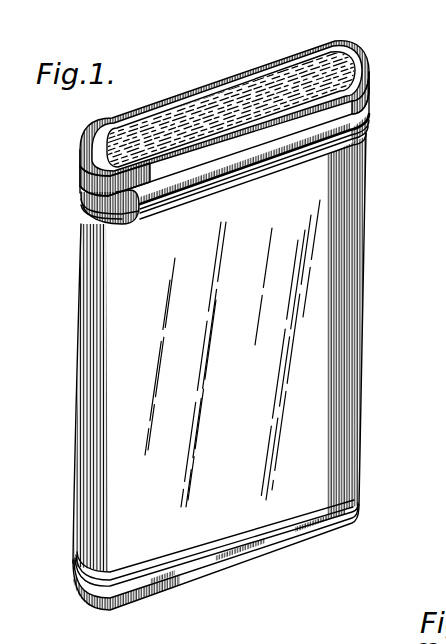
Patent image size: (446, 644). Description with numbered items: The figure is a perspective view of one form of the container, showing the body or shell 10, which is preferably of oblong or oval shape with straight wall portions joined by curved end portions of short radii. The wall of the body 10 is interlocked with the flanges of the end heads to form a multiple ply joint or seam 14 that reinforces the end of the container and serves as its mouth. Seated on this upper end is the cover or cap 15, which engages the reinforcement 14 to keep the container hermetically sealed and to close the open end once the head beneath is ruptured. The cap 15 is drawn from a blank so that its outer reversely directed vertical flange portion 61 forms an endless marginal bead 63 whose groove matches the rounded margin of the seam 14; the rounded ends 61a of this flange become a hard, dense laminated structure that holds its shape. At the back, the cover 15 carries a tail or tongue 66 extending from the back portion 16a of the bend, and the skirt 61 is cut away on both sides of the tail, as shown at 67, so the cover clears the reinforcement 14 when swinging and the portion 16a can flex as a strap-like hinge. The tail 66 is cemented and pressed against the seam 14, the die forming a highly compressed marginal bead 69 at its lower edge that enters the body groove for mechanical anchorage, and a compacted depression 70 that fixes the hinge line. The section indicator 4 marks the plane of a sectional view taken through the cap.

The body or shell 10 is at (340, 287).
The multiple ply joint or seam 14 is at (300, 533).
The cover or cap 15 is at (344, 43).
The back portion of the bend 16a is at (193, 167).
The outer reversely directed vertical flange portion 61 is at (67, 178).
The rounded or curved ends of the flange 61a is at (368, 72).
The endless marginal bead 63 is at (186, 91).
The tail or tongue 66 is at (323, 146).
The cut-away portions of the skirt 67 is at (370, 120).
The compressed marginal bead 69 is at (226, 188).
The depression 70 is at (278, 151).
The section line 4- 4 is at (146, 124).